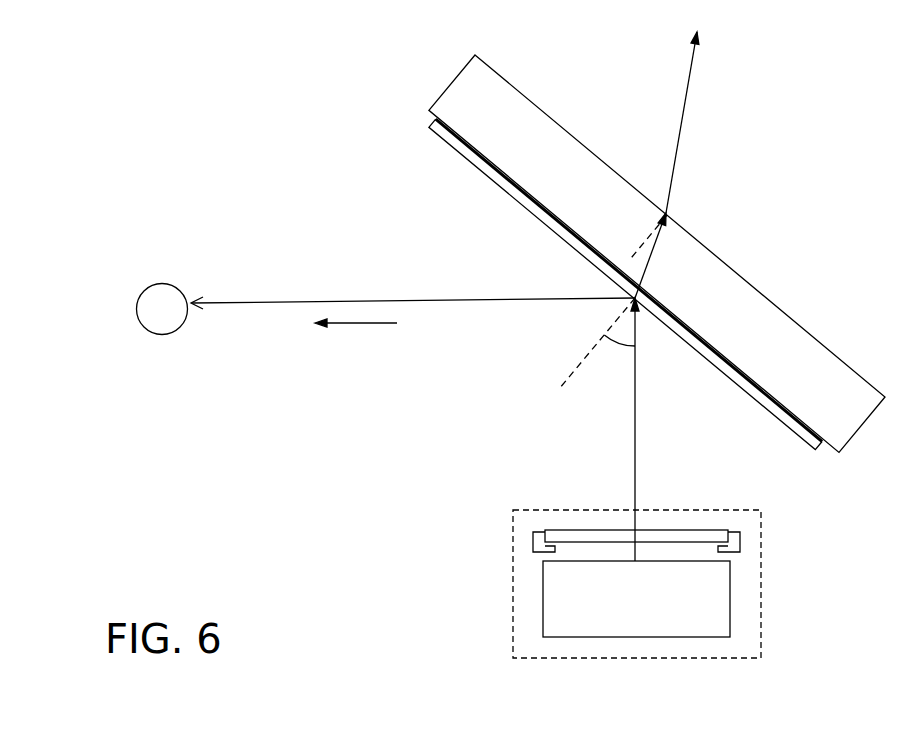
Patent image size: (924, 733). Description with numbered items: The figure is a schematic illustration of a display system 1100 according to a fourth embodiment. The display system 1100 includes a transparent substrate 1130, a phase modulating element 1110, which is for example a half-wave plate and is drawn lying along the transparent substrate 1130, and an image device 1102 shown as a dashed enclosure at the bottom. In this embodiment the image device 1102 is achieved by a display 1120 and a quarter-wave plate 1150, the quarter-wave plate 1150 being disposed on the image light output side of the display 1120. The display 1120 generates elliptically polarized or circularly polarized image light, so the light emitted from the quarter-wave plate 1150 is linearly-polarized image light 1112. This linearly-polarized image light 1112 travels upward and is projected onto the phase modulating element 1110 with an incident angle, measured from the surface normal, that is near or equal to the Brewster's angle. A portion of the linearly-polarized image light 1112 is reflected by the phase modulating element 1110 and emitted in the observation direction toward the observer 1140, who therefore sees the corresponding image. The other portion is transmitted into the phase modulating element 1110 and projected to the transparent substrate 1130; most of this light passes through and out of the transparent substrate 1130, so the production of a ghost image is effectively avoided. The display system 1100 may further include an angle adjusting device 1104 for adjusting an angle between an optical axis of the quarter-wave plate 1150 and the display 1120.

The display system 1100 is at (882, 53).
The phase modulating element 1110 is at (490, 177).
The transparent substrate 1130 is at (740, 318).
The observer 1140 is at (157, 315).
The linearly-polarized image light 1112 is at (635, 443).
The quarter-wave plate 1150 is at (713, 527).
The image device 1102 is at (762, 570).
The angle adjusting device 1104 is at (533, 545).
The display 1120 is at (700, 605).